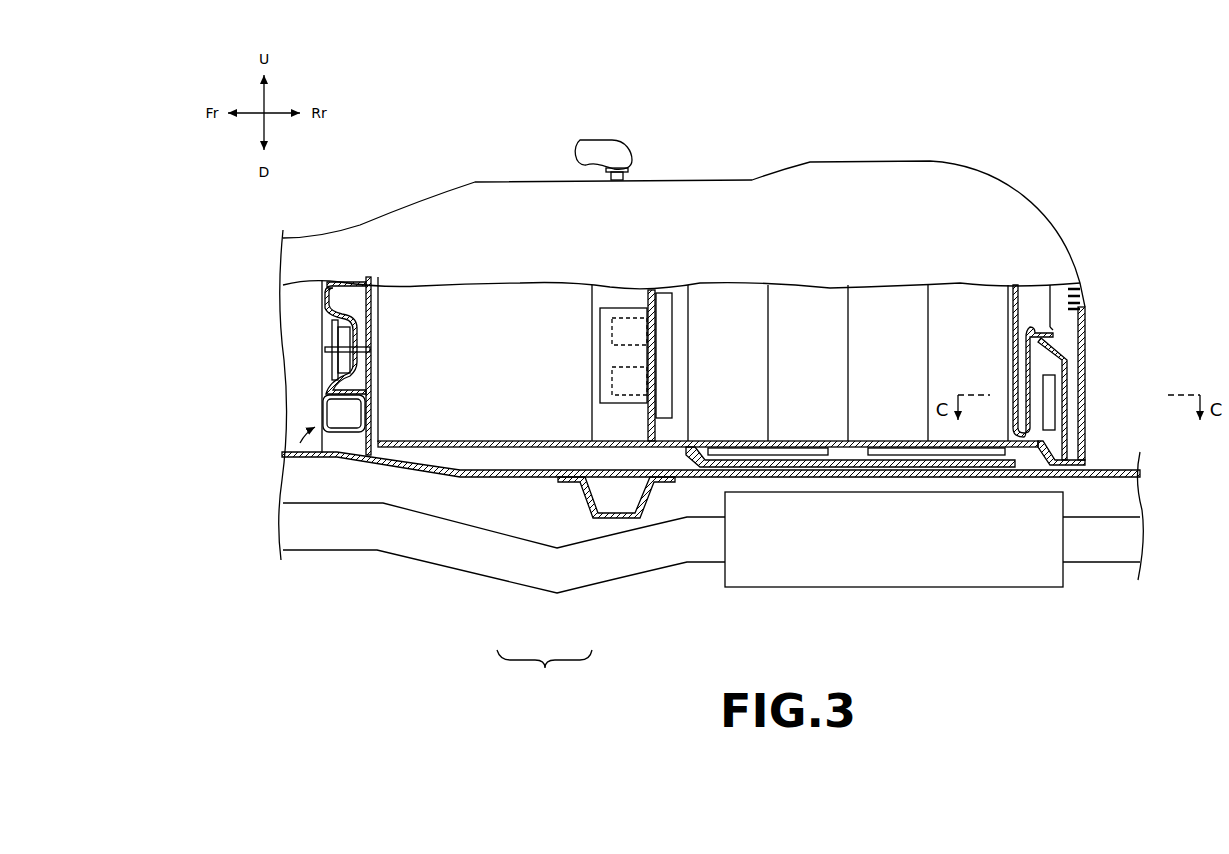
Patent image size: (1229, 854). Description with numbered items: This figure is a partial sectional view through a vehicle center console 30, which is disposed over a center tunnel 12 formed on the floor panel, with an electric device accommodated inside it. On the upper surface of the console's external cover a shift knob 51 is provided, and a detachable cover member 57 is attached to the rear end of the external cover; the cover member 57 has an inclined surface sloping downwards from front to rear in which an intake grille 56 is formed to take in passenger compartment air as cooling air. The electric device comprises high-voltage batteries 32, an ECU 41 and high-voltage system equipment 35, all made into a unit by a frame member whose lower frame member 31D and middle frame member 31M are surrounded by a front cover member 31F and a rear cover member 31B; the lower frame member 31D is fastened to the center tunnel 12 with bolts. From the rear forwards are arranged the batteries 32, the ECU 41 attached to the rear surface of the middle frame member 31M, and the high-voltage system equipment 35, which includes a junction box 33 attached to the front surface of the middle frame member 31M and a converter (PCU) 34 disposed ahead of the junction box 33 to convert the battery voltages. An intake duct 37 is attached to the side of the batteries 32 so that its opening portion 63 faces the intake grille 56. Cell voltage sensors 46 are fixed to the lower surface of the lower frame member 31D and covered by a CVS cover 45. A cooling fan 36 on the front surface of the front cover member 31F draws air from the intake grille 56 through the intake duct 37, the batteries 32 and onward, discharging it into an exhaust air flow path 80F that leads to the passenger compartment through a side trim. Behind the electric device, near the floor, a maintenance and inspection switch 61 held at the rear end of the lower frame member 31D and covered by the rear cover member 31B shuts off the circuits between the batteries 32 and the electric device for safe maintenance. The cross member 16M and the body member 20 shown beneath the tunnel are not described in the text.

The center tunnel 12 is at (1110, 494).
The cross member 16M is at (650, 493).
The vehicle body member 20 is at (378, 527).
The center console 30 is at (942, 140).
The rear cover member 31B is at (1068, 378).
The lower frame member 31D is at (452, 448).
The front cover member 31F is at (370, 323).
The middle frame member 31M is at (622, 310).
The high-voltage batteries 32 is at (890, 320).
The junction box 33 is at (608, 405).
The converter (PCU) 34 is at (508, 395).
The high-voltage system equipment 35 is at (544, 671).
The cooling fan 36 is at (347, 297).
The intake duct 37 is at (1031, 297).
The ECU 41 is at (656, 320).
The CVS cover 45 is at (1003, 455).
The cell voltage sensors (CVS) 46 is at (795, 455).
The shift knob 51 is at (612, 138).
The intake grille 56 is at (1082, 290).
The cover member 57 is at (1086, 447).
The maintenance and inspection switch 61 is at (1056, 405).
The opening portion 63 is at (1054, 290).
The exhaust air flow path 80F is at (297, 456).